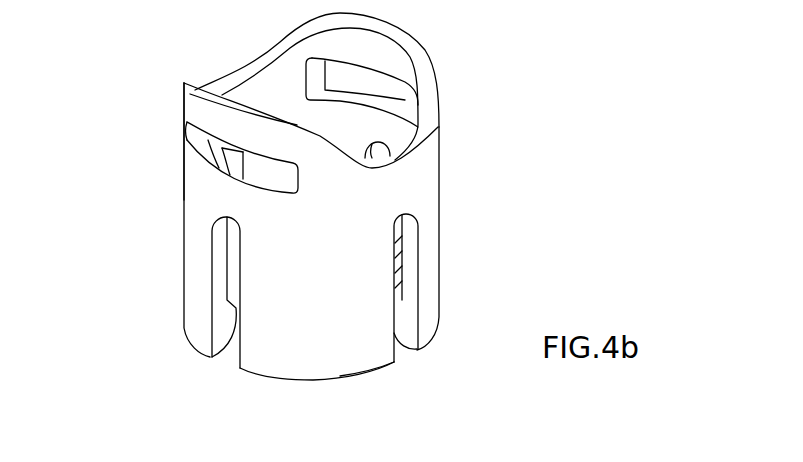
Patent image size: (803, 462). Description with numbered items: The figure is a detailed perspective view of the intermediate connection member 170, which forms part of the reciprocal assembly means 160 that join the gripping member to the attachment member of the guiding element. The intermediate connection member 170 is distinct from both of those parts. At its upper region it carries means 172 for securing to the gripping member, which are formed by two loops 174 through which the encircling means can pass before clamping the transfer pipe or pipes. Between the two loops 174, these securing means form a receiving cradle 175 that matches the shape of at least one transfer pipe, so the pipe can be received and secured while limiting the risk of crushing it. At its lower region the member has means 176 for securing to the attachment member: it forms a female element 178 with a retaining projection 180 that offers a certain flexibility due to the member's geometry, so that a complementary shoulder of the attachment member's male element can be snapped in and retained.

The intermediate connection member 170 is at (485, 180).
The reciprocal assembly means 160 is at (433, 231).
The means for securing to the gripping member 172 is at (165, 126).
The loops 174 is at (203, 156).
The receiving cradle 175 is at (248, 77).
The means for securing to the attachment member 176 is at (408, 366).
The female element 178 is at (437, 297).
The retaining projection 180 is at (236, 277).